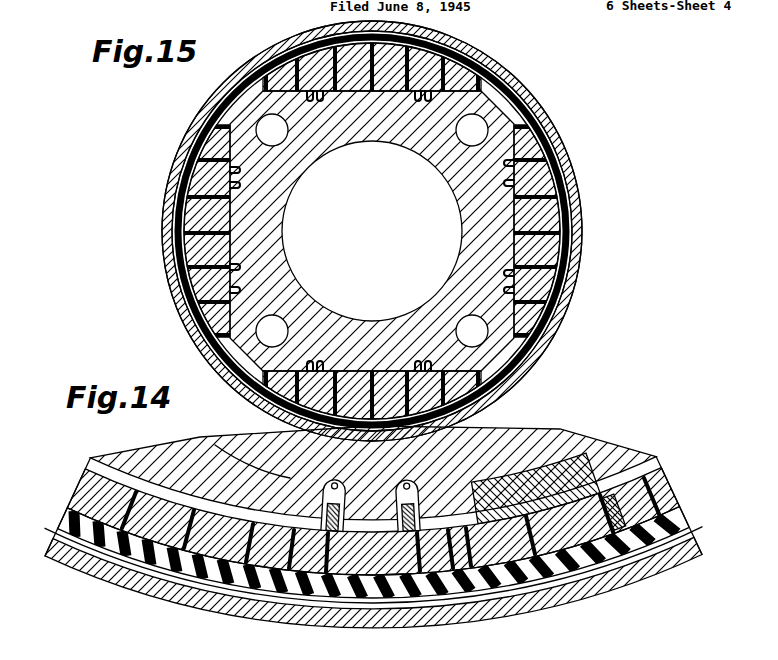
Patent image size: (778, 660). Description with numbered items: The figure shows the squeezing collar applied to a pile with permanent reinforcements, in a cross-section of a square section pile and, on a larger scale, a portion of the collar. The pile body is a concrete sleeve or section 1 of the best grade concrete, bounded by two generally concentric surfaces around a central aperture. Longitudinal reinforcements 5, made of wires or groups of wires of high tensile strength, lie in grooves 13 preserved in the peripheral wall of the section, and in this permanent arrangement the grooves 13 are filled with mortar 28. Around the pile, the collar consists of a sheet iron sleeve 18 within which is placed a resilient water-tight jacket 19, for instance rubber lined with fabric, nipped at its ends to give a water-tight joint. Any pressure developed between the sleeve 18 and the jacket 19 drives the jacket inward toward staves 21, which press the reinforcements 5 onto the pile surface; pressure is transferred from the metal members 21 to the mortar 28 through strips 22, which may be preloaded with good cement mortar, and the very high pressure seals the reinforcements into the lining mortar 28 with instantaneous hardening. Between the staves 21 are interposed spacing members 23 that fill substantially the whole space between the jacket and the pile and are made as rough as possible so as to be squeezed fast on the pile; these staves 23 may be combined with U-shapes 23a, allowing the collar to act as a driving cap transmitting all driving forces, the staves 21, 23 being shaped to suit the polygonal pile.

In FIG. 15, the sleeve or section 1 is at (385, 141).
In FIG. 14, the sleeve or section 1 is at (137, 443).
In FIG. 15, the reinforcements 5 is at (190, 142).
In FIG. 14, the reinforcements 5 is at (330, 470).
In FIG. 14, the grooves 13 is at (460, 460).
In FIG. 15, the sheet iron sleeve 18 is at (568, 278).
In FIG. 14, the sheet iron sleeve 18 is at (500, 605).
In FIG. 15, the resilient water-tight jacket 19 is at (525, 372).
In FIG. 14, the resilient water-tight jacket 19 is at (538, 585).
In FIG. 15, the staves 21 is at (172, 283).
In FIG. 14, the staves 21 is at (378, 562).
In FIG. 15, the strips 22 is at (178, 303).
In FIG. 14, the strips 22 is at (311, 598).
In FIG. 15, the spacing members 23 is at (165, 200).
In FIG. 14, the spacing members 23 is at (112, 575).
In FIG. 14, the U-shapes 23a is at (583, 522).
In FIG. 14, the mortar 28 is at (322, 480).